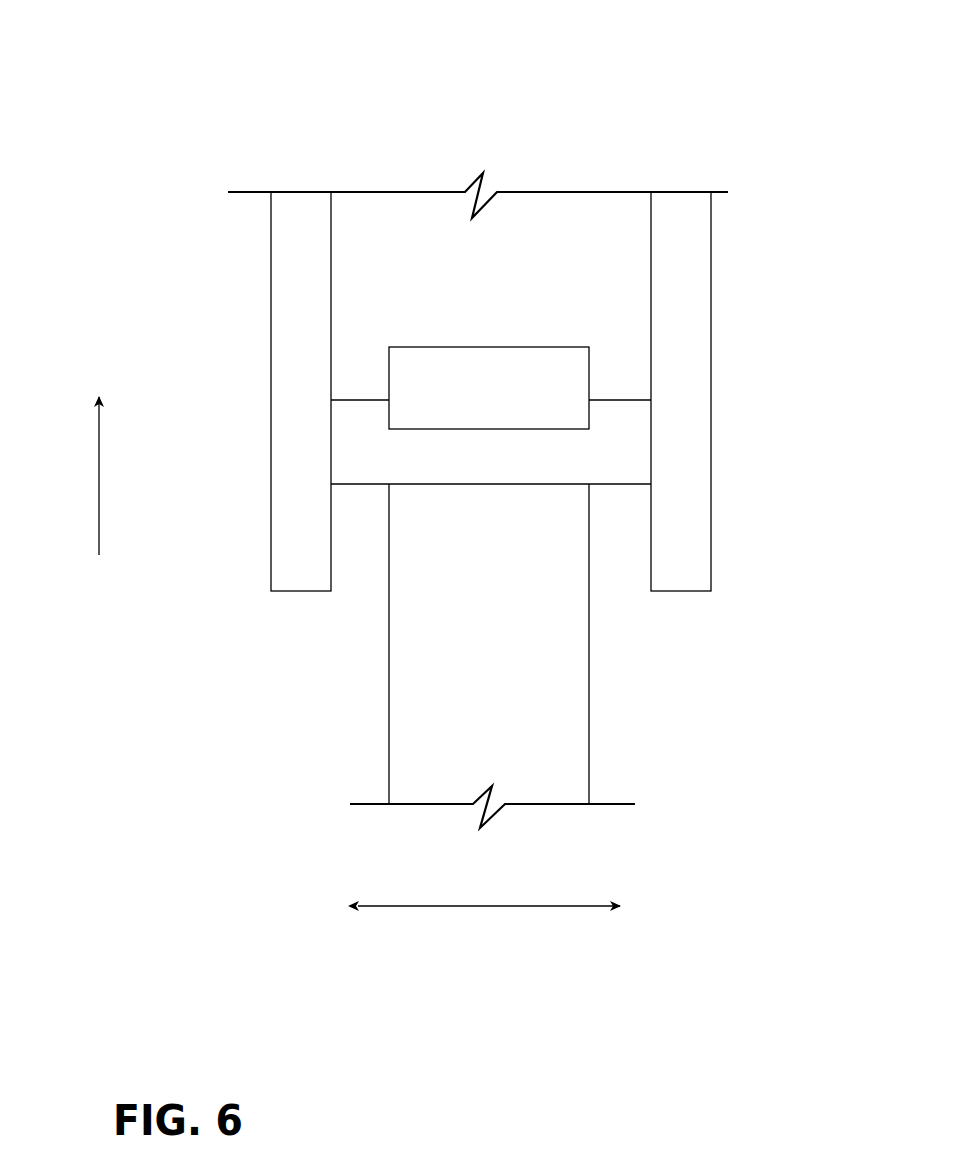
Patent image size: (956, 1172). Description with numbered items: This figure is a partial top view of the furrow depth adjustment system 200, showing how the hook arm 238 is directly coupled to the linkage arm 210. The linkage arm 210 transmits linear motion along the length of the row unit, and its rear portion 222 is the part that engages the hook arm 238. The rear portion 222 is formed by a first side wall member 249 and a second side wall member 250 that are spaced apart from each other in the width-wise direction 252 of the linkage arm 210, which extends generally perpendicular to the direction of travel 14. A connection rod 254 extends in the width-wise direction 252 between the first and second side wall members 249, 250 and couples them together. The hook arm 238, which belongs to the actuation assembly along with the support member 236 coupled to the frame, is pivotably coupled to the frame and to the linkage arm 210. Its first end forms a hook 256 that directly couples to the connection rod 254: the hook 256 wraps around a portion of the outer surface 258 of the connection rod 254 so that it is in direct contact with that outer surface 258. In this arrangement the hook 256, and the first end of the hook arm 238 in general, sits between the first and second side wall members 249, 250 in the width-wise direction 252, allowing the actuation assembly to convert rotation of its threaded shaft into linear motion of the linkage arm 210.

The furrow depth adjustment system 200 is at (175, 135).
The linkage arm 210 is at (235, 302).
The rear portion 222 is at (239, 427).
The first side wall member 249 is at (271, 508).
The second side wall member 250 is at (712, 453).
The support member 236 is at (486, 317).
The hook 256 is at (522, 362).
The connection rod 254 is at (615, 397).
The outer surface 258 is at (522, 458).
The hook arm 238 is at (389, 733).
The width-wise direction 252 is at (470, 906).
The direction of travel 14 is at (98, 502).